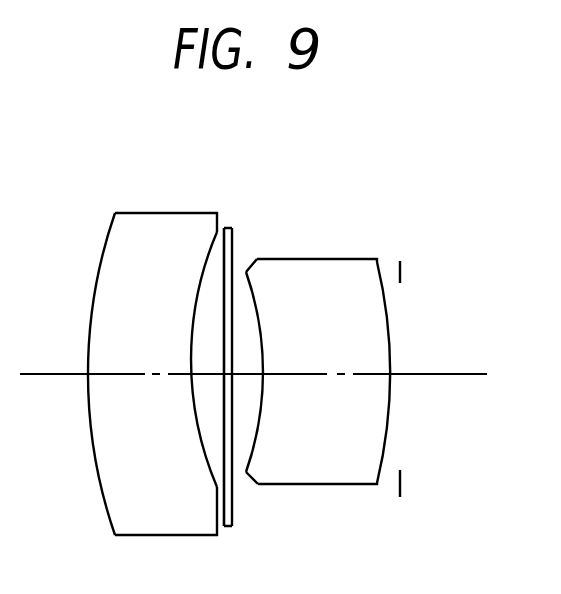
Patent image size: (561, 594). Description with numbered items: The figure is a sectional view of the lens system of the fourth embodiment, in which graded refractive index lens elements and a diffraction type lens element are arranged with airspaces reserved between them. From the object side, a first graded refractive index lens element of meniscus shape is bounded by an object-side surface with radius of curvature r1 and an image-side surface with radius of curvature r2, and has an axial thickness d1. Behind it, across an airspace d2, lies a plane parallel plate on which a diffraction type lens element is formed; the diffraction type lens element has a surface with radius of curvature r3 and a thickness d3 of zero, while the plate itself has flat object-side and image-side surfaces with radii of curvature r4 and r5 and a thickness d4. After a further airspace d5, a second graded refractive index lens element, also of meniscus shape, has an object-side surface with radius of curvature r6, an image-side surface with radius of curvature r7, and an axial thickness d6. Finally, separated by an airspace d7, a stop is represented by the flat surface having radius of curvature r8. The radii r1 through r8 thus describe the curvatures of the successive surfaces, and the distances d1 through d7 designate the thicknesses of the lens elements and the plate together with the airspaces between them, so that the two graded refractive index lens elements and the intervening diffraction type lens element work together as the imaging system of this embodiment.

The radius of curvature r1 is at (108, 234).
The radius of curvature r2 is at (211, 265).
The radius of curvature r3 is at (224, 280).
The radius of curvature r4 is at (230, 232).
The radius of curvature r5 is at (238, 258).
The radius of curvature r6 is at (258, 297).
The radius of curvature r7 is at (383, 290).
The radius of curvature r8 is at (400, 261).
The thickness d1 is at (113, 375).
The airspace d2 is at (192, 375).
The thickness d3 is at (225, 380).
The thickness d4 is at (228, 373).
The airspace d5 is at (250, 378).
The thickness d6 is at (315, 378).
The airspace d7 is at (390, 378).